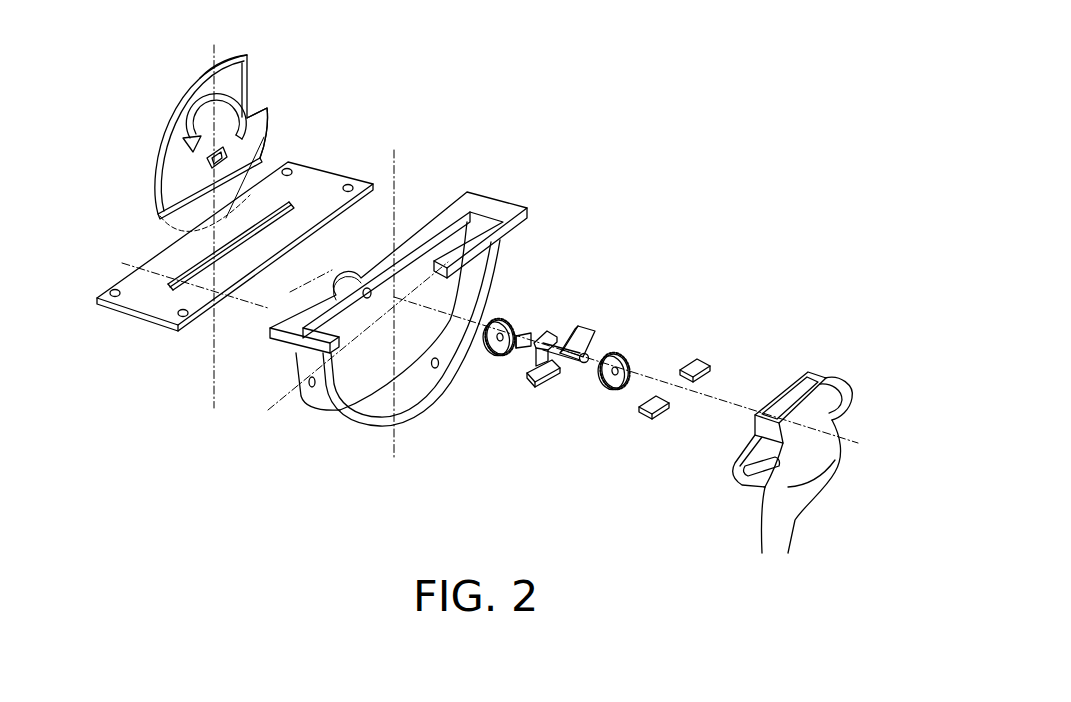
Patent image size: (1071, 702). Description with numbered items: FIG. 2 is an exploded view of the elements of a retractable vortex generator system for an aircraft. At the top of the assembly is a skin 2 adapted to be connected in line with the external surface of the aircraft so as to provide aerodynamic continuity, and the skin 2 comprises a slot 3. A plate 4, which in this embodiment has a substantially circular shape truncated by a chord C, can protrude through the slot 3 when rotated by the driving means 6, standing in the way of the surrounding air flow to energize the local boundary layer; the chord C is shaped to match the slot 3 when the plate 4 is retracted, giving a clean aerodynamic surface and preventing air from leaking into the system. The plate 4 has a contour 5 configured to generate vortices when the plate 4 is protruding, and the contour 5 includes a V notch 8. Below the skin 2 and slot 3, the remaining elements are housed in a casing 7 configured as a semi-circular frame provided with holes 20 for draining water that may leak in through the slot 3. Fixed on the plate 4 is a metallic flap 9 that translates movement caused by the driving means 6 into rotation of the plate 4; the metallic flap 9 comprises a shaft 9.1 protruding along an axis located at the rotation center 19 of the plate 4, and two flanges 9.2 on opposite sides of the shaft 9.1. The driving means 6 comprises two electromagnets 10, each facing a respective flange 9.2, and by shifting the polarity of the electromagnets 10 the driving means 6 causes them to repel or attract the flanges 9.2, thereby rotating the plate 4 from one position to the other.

The skin 2 is at (147, 302).
The slot 3 is at (292, 198).
The plate 4 is at (237, 76).
The contour 5 is at (182, 97).
The driving means 6 is at (672, 268).
The casing 7 is at (441, 384).
The V notch 8 is at (257, 102).
The metallic flap 9 is at (557, 359).
The shaft 9.1 is at (587, 366).
The flanges 9.2 is at (551, 387).
The electromagnets 10 is at (705, 352).
The rotation center 19 is at (207, 158).
The holes 20 is at (311, 381).
The chord C is at (270, 147).